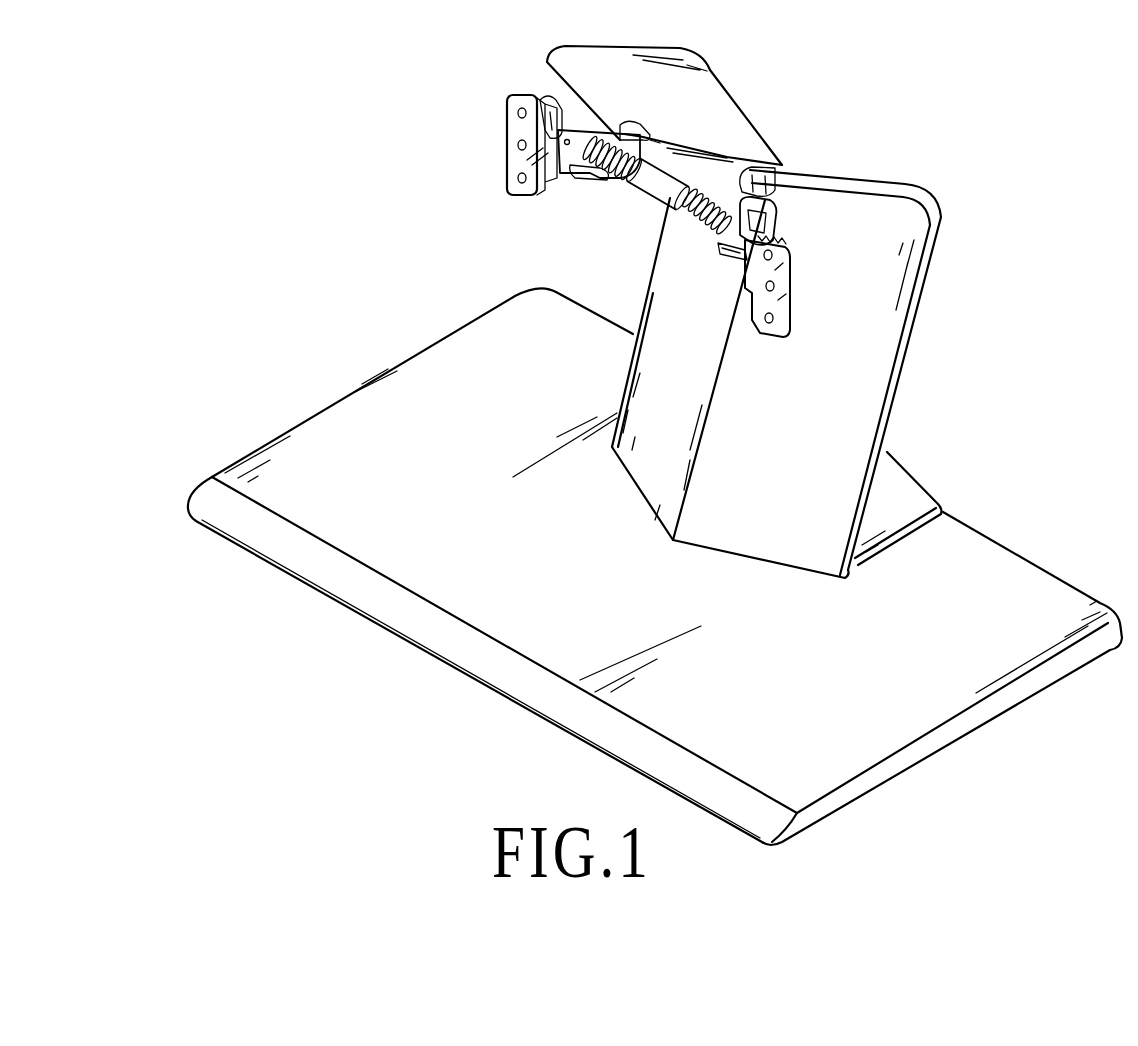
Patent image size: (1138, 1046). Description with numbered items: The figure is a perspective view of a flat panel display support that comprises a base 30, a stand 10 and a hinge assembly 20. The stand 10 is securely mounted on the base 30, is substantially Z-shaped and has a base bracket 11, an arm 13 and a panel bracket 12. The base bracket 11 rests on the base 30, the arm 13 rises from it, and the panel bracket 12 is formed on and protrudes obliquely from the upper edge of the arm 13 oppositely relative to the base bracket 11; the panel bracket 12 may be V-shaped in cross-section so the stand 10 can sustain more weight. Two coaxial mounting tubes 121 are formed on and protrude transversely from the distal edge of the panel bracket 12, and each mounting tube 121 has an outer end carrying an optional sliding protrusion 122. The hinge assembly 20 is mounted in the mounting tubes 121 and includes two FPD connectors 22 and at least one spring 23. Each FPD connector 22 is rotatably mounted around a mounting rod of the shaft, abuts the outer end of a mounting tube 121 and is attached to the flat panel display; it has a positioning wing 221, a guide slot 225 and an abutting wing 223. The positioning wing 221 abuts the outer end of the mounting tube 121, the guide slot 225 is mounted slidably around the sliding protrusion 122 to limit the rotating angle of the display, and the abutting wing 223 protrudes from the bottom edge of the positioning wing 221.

The stand 10 is at (776, 312).
The base bracket 11 is at (906, 497).
The panel bracket 12 is at (697, 95).
The mounting tube 121 is at (580, 102).
The sliding protrusion 122 is at (767, 222).
The arm 13 is at (873, 395).
The hinge assembly 20 is at (560, 190).
The FPD connector 22 is at (473, 146).
The positioning wing 221 is at (513, 123).
The abutting wing 223 is at (740, 255).
The guide slot 225 is at (780, 240).
The spring 23 is at (617, 180).
The base 30 is at (380, 405).